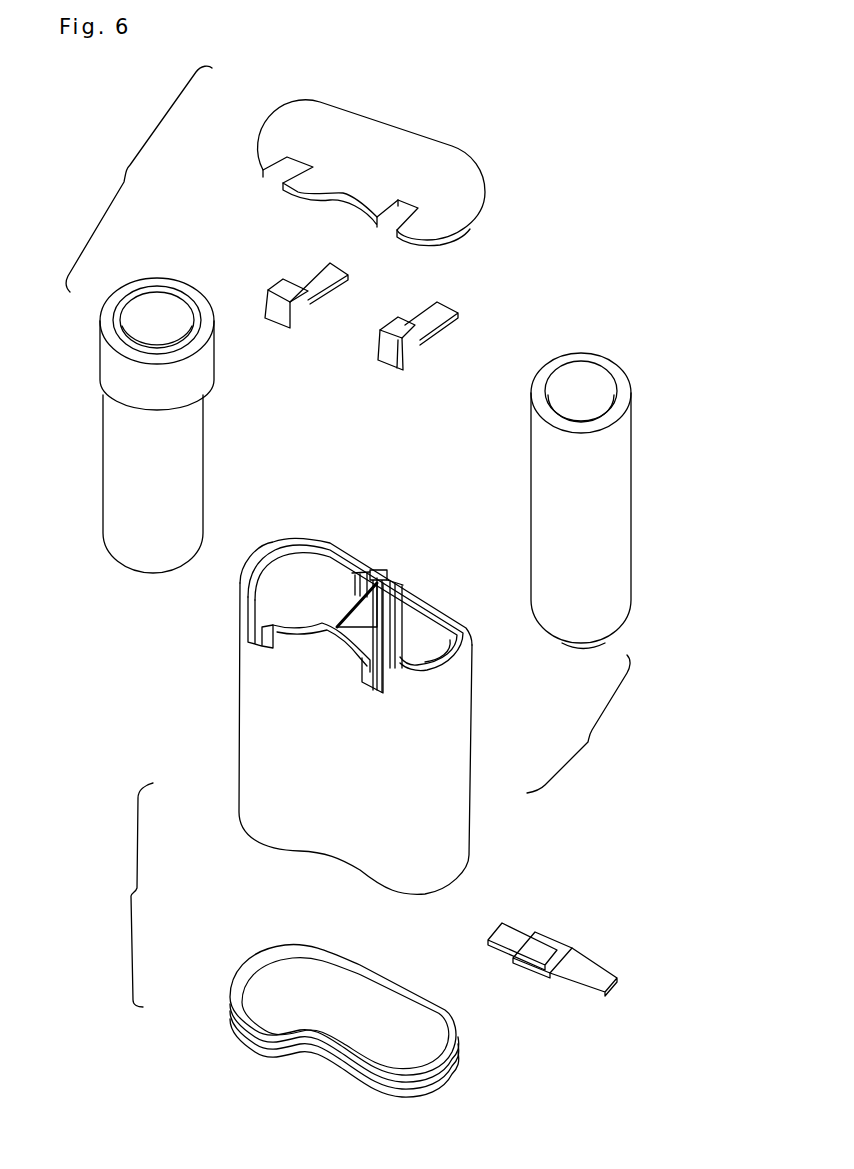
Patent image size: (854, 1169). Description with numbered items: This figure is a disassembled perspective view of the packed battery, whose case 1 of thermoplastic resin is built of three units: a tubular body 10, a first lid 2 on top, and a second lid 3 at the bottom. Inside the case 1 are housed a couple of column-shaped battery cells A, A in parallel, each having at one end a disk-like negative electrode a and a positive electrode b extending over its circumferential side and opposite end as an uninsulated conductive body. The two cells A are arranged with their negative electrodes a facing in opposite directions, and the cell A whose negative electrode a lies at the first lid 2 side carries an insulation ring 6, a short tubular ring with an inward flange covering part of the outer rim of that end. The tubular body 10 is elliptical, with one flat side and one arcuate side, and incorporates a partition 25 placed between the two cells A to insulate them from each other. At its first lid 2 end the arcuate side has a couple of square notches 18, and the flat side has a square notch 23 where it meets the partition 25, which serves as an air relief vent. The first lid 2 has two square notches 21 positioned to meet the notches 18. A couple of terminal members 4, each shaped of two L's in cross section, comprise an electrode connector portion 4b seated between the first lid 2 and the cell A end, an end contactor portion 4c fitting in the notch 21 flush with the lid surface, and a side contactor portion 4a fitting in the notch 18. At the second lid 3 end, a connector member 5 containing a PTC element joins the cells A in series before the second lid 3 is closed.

The case 1 is at (317, 705).
The first lid 2 is at (353, 181).
The second lid 3 is at (232, 1016).
The terminal member 4 is at (366, 323).
The side contactor portion 4a is at (277, 320).
The electrode connector portion 4b is at (312, 272).
The end contactor portion 4c is at (299, 291).
The connector member 5 is at (538, 969).
The insulation ring 6 is at (202, 373).
The tubular body 10 is at (252, 797).
The square notches 18 is at (256, 619).
The square notches 21 is at (280, 170).
The square notch 23 is at (390, 573).
The partition 25 is at (360, 612).
The battery cell A is at (370, 463).
The negative electrode a is at (161, 306).
The positive electrode b is at (190, 492).